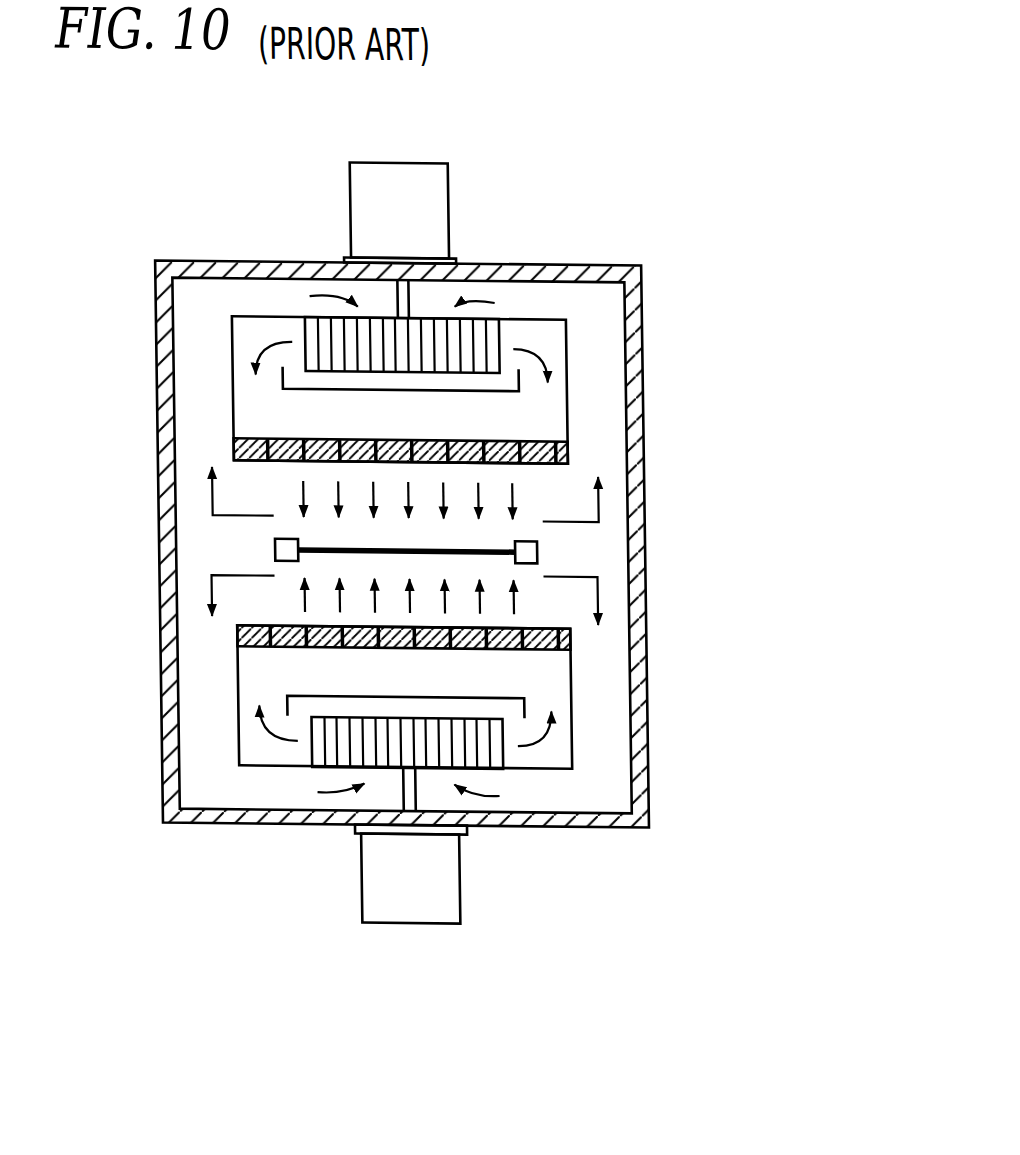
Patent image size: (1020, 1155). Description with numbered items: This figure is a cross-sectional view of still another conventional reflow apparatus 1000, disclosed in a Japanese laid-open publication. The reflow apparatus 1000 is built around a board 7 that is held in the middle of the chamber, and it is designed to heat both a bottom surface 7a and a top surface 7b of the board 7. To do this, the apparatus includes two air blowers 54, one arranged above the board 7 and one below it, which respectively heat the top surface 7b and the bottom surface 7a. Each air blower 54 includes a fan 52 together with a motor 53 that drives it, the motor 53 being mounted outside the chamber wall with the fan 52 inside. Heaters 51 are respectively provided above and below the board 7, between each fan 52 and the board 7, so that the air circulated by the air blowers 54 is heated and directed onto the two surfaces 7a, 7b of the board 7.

The reflow apparatus 1000 is at (763, 136).
The air blower 54 is at (660, 162).
The motor 53 is at (425, 185).
The fan 52 is at (503, 331).
The heater 51 is at (568, 445).
The board 7 is at (517, 547).
The bottom surface 7a is at (335, 555).
The top surface 7b is at (314, 552).